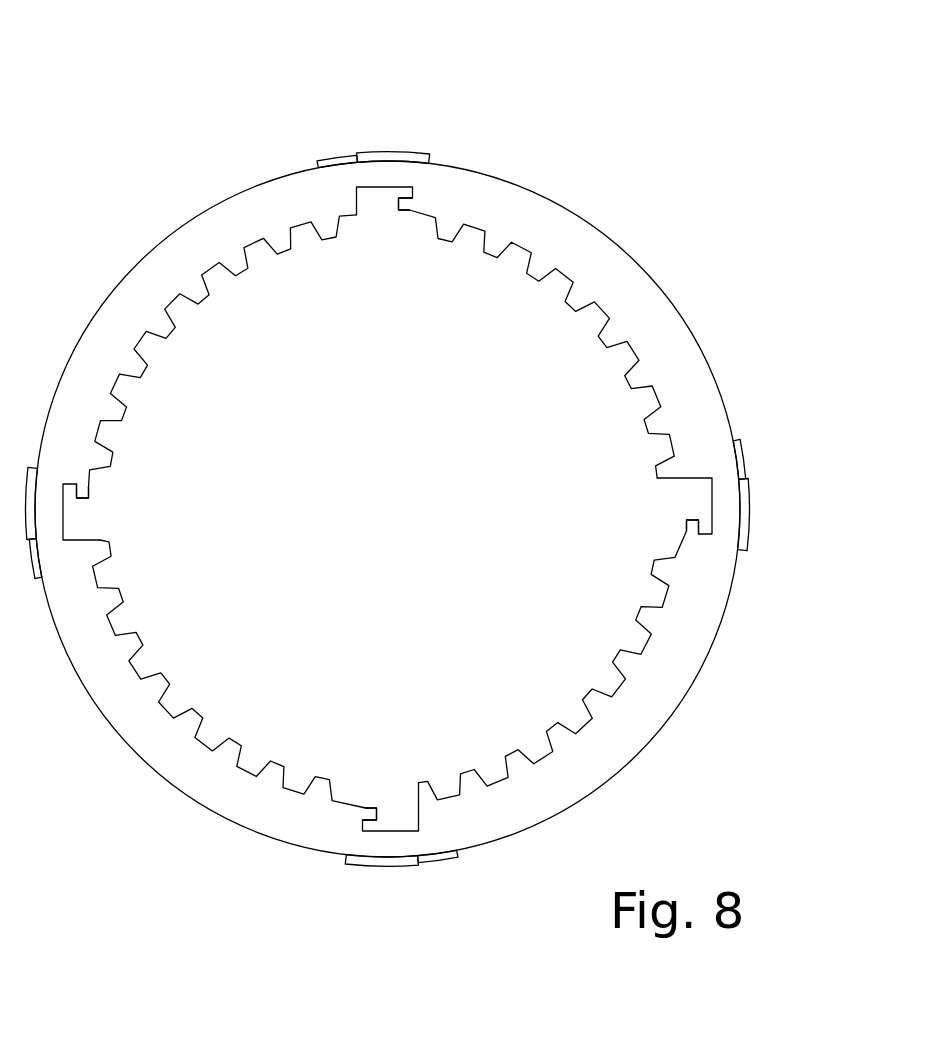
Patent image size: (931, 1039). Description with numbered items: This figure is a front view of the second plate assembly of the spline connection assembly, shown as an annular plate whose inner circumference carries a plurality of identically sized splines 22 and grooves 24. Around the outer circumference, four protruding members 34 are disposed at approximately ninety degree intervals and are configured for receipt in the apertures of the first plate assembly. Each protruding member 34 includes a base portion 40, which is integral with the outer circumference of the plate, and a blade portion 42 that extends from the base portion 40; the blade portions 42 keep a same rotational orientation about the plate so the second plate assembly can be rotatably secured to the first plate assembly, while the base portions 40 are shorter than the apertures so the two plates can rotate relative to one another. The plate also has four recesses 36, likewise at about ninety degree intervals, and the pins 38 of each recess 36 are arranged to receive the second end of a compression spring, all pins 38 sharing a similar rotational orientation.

The splines 22 is at (165, 250).
The grooves 24 is at (660, 593).
The protruding members 34 is at (387, 447).
The recesses 36 is at (375, 190).
The pins 38 is at (400, 211).
The base portion 40 is at (363, 152).
The blade portion 42 is at (328, 153).